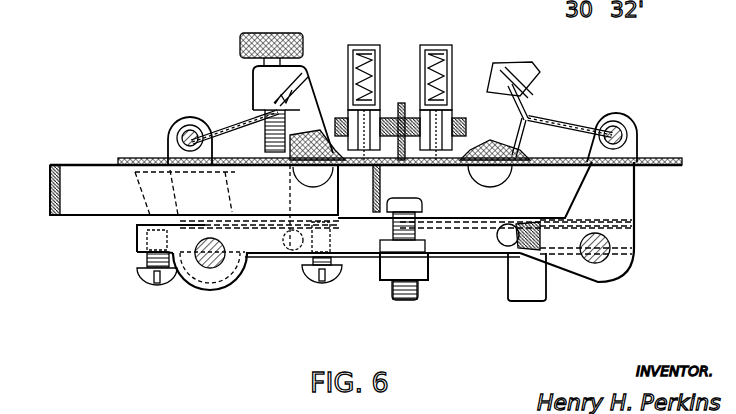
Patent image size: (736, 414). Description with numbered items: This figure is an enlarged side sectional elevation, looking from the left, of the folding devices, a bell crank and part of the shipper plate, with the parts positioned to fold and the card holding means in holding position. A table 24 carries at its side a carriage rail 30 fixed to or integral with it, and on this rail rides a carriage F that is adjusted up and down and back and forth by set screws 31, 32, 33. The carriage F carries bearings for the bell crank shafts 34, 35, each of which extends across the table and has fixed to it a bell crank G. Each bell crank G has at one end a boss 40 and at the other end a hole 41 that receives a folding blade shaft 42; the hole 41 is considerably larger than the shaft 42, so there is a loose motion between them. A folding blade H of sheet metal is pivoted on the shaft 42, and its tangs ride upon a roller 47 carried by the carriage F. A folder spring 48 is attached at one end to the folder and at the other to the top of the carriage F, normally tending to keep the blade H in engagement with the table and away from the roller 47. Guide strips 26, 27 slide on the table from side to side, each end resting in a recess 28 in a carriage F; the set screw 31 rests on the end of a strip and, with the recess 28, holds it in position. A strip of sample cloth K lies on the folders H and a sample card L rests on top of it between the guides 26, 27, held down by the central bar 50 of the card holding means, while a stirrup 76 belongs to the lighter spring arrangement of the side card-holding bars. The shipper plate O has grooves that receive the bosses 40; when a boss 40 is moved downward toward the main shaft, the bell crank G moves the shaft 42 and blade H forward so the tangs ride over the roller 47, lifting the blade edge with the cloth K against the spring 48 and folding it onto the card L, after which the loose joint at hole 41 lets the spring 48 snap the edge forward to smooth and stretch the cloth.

The table 24 is at (160, 160).
The guide strip 26 is at (290, 165).
The guide strip 27 is at (527, 157).
The recess 28 is at (213, 157).
The carriage rail 30 is at (78, 192).
The set screw 31 is at (240, 47).
The set screw 32 is at (147, 283).
The set screw 33 is at (333, 282).
The bell crank shaft 34 is at (207, 268).
The bell crank shaft 35 is at (627, 243).
The boss 40 is at (506, 252).
The hole 41 is at (625, 128).
The folding blade shaft 42 is at (628, 138).
The roller 47 is at (308, 172).
The folder spring 48 is at (292, 92).
The central bar 50 is at (427, 115).
The stirrup 76 is at (398, 107).
The carriage F is at (252, 90).
The bell crank G is at (253, 258).
The folding blade H is at (245, 130).
The sample cloth K is at (462, 165).
The sample card L is at (465, 157).
The shipper plate O is at (520, 290).